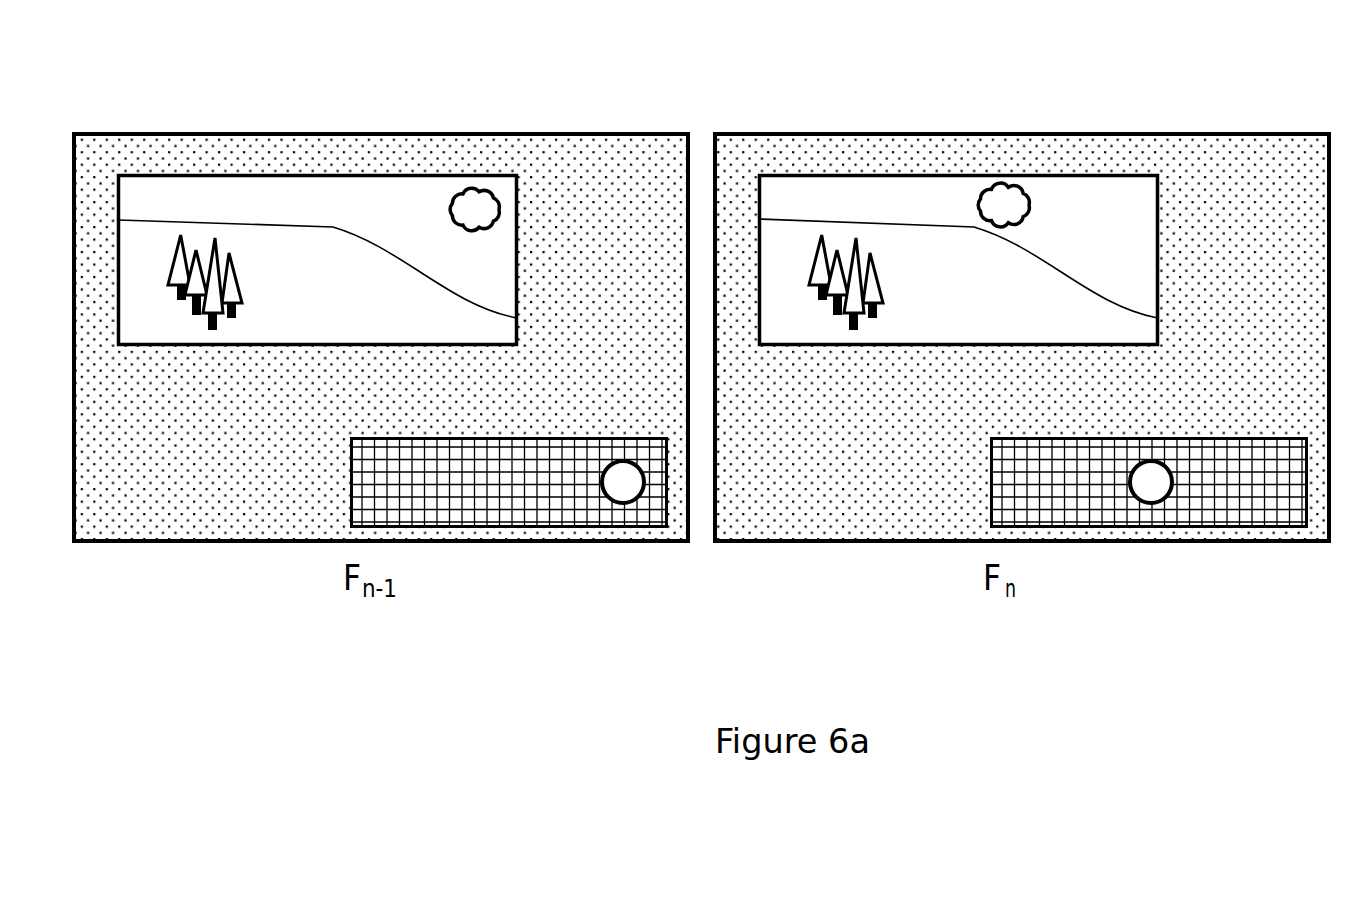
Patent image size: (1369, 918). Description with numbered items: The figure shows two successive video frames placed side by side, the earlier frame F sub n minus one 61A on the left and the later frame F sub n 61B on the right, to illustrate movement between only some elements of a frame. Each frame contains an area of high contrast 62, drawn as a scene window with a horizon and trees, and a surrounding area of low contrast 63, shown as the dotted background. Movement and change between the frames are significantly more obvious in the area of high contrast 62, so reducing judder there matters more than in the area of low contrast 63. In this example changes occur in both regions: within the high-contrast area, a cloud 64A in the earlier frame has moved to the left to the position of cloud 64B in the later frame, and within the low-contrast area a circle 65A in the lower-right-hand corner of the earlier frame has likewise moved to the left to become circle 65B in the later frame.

The frame F(n-1) 61A is at (381, 359).
The frame F(n) 61B is at (1023, 133).
The area of high contrast 62 is at (268, 203).
The area of low contrast 63 is at (247, 437).
The cloud 64A is at (502, 207).
The cloud 64B is at (1002, 180).
The circle 65A is at (624, 504).
The circle 65B is at (1166, 498).